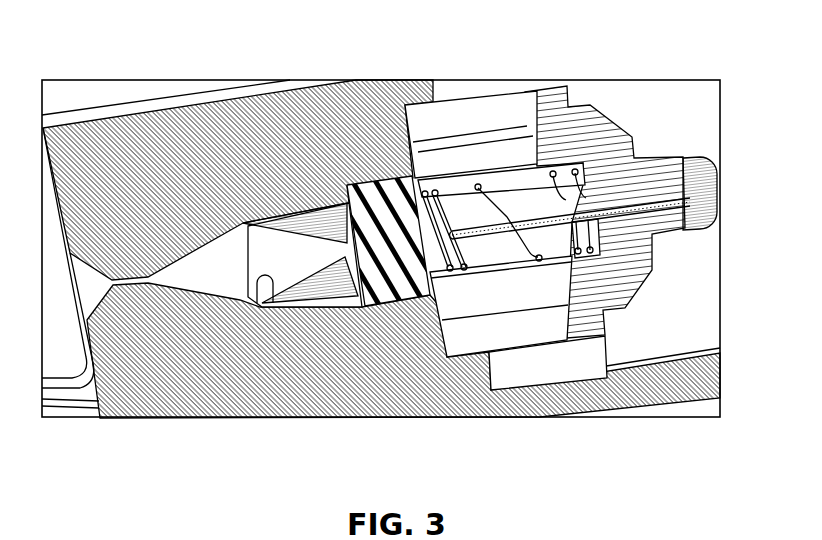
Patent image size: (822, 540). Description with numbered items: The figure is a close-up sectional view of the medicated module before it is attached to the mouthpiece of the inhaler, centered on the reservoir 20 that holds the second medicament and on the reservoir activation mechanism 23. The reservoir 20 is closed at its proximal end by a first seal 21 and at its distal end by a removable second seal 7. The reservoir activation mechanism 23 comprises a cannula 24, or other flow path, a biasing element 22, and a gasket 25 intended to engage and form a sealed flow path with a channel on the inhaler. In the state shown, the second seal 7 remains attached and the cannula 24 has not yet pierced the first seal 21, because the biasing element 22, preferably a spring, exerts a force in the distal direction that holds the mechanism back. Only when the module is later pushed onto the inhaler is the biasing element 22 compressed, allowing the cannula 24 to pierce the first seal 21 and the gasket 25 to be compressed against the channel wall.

The removable second seal 7 is at (97, 412).
The reservoir 20 is at (272, 408).
The first seal 21 is at (402, 408).
The biasing element 22 is at (503, 187).
The reservoir activation mechanism 23 is at (593, 287).
The cannula 24 is at (650, 205).
The gasket 25 is at (712, 172).